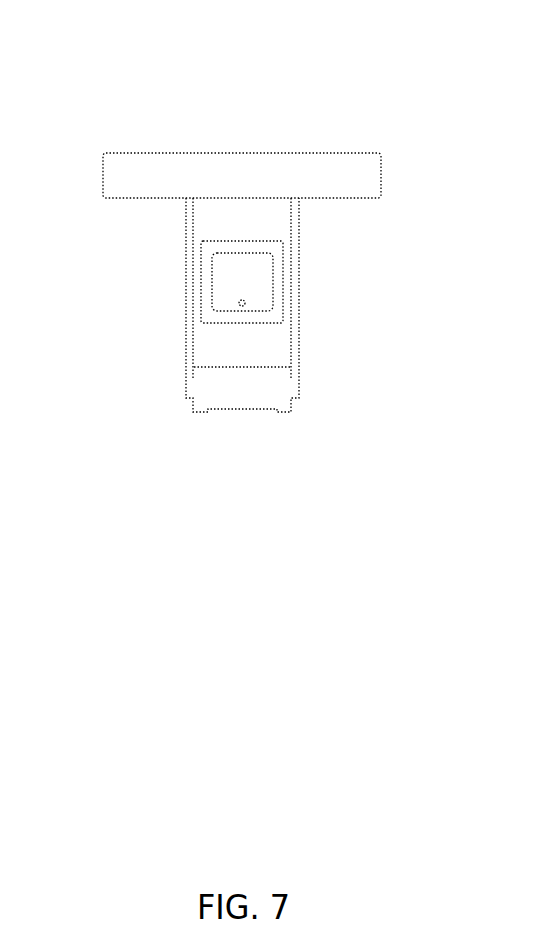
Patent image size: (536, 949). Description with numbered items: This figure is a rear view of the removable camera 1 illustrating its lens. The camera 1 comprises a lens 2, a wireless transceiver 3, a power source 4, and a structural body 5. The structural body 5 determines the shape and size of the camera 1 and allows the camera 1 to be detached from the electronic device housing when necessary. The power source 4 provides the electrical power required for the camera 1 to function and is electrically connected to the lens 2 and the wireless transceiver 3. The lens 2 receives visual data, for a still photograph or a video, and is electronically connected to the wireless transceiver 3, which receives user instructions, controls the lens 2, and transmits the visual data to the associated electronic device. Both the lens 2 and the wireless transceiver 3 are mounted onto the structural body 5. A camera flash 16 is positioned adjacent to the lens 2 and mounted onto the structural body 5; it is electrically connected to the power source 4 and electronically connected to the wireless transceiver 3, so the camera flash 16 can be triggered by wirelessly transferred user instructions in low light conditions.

The camera 1 is at (332, 93).
The lens 2 is at (241, 280).
The wireless transceiver 3 is at (216, 303).
The power source 4 is at (205, 265).
The structural body 5 is at (125, 162).
The camera flash 16 is at (242, 306).